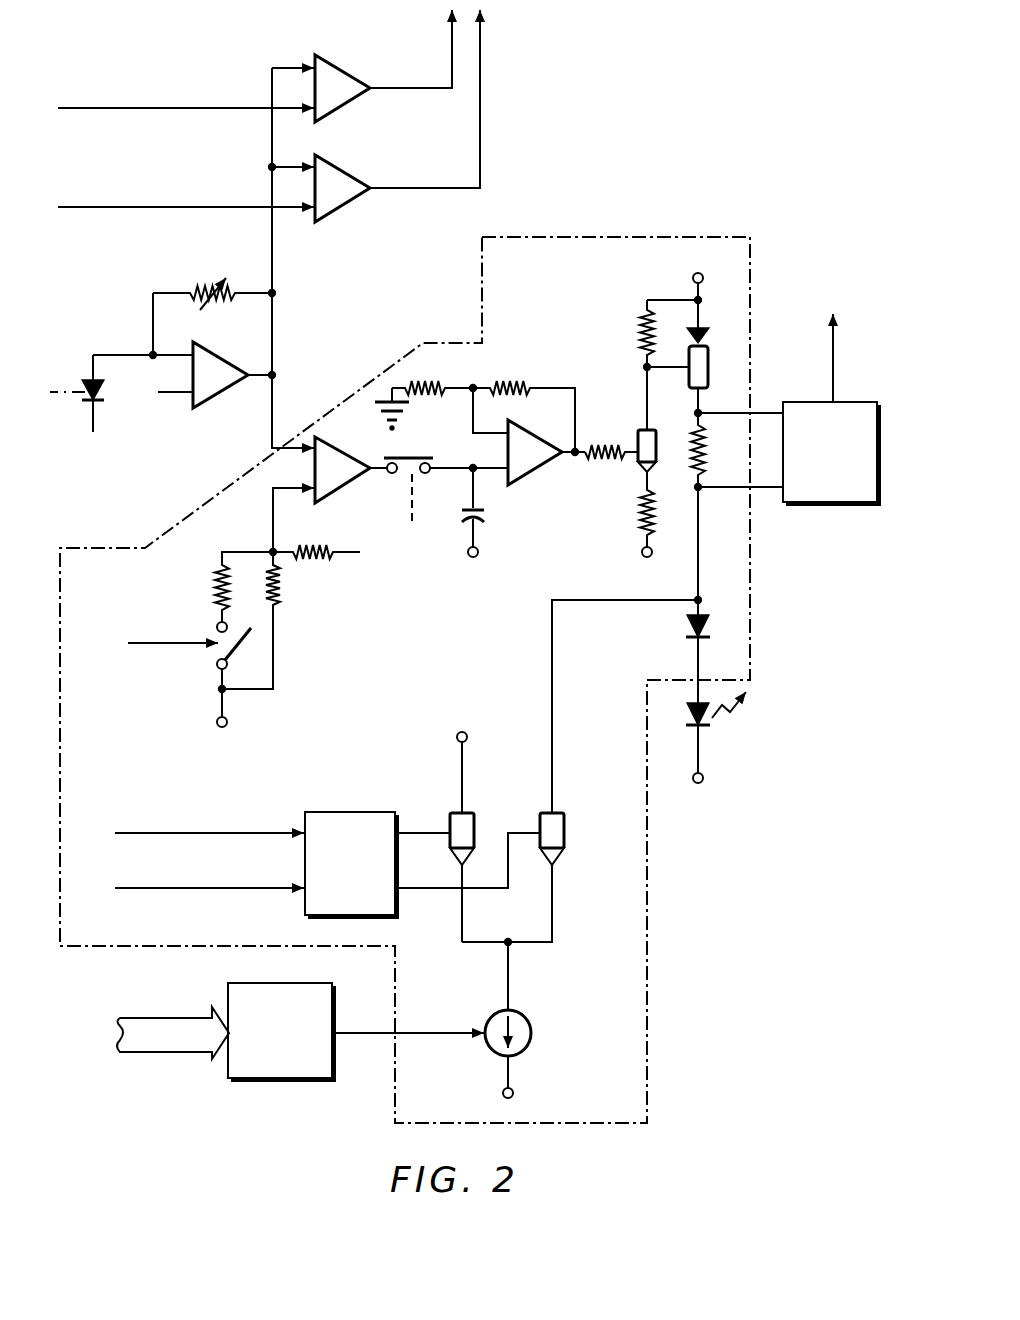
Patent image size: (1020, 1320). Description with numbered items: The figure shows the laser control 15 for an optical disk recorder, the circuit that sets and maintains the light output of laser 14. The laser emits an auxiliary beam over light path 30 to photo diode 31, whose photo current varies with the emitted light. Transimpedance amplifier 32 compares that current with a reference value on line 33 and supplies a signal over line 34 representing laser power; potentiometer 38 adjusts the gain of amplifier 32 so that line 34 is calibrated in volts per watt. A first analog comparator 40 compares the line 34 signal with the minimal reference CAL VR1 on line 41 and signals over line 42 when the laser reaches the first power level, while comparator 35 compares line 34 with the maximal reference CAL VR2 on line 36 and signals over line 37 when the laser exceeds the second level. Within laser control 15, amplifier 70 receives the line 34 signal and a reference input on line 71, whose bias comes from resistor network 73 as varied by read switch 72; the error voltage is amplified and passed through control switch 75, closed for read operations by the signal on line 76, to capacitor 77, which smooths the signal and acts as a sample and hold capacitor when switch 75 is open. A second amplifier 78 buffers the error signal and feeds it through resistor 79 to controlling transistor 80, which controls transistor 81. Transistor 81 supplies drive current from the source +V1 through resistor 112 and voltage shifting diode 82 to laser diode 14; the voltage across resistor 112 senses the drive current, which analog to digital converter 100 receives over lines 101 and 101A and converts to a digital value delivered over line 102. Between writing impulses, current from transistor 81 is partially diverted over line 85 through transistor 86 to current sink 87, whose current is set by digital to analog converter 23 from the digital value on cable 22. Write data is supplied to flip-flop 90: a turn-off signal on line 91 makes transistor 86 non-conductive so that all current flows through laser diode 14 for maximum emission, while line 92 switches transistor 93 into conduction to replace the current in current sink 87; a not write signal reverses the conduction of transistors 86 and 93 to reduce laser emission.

The laser 14 is at (692, 728).
The laser control 15 is at (536, 294).
The cable 22 is at (174, 1018).
The digital to analog converter 23 is at (296, 965).
The light path 30 is at (68, 388).
The photo diode 31 is at (86, 404).
The transimpedance amplifier 32 is at (214, 347).
The line 33 is at (172, 395).
The line 34 is at (274, 325).
The comparator 35 is at (342, 170).
The line 36 is at (200, 209).
The line 37 is at (410, 190).
The potentiometer 38 is at (213, 285).
The first analog comparator 40 is at (342, 70).
The line 41 is at (200, 110).
The line 42 is at (407, 90).
The amplifier 70 is at (368, 450).
The line 71 is at (274, 498).
The read switch 72 is at (232, 648).
The resistor network 73 is at (214, 586).
The control switch 75 is at (426, 454).
The line 76 is at (408, 494).
The capacitor 77 is at (485, 514).
The second amplifier 78 is at (552, 441).
The resistor 79 is at (600, 460).
The controlling transistor 80 is at (638, 430).
The transistor 81 is at (710, 360).
The voltage shifting diode 82 is at (708, 636).
The line 85 is at (550, 668).
The transistor 86 is at (570, 822).
The current sink 87 is at (532, 1010).
The switch 90 is at (382, 812).
The line 91 is at (408, 889).
The line 92 is at (414, 834).
The transistor 93 is at (475, 813).
The analog to digital converter 100 is at (842, 505).
The line 101 is at (758, 413).
The input line 101A is at (778, 489).
The line 102 is at (834, 372).
The resistor 112 is at (704, 440).